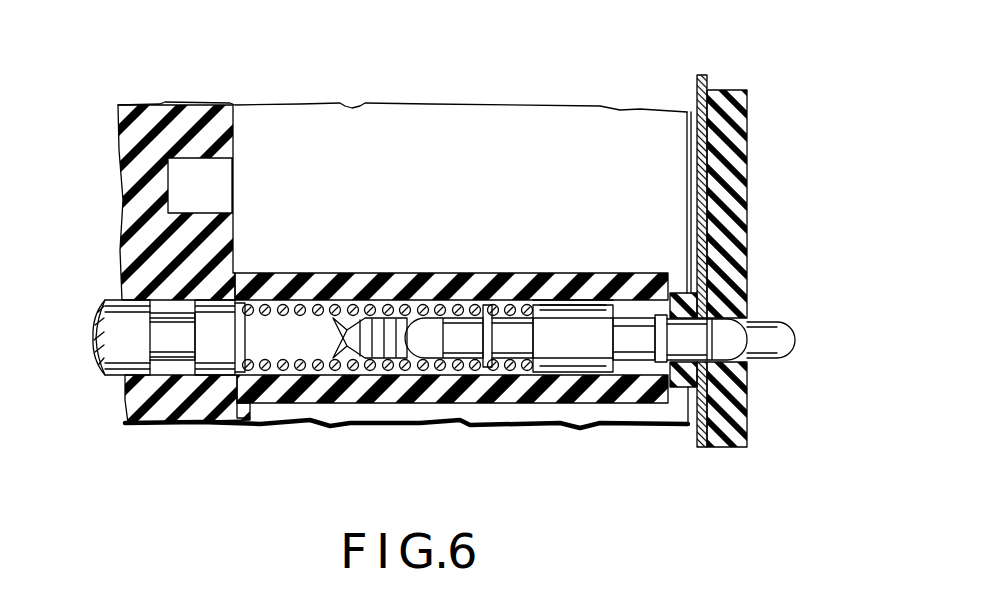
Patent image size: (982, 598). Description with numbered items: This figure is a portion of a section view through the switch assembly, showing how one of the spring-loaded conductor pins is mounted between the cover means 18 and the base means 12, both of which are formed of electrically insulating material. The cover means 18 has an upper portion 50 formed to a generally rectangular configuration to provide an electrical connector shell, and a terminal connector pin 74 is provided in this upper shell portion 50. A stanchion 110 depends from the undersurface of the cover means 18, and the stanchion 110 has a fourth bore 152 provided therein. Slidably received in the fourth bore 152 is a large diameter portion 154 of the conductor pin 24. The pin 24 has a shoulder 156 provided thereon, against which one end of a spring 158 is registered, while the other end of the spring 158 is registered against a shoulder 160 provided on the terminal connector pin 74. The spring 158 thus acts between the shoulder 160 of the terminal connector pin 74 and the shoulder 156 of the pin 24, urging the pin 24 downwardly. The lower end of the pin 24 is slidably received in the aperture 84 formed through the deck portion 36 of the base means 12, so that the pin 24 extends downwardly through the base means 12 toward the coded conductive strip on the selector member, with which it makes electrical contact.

The base means 12 is at (758, 168).
The cover means 18 is at (336, 94).
The conductor pin 24 is at (780, 318).
The deck portion 36 is at (688, 405).
The upper portion 50 is at (160, 103).
The terminal connector pin 74 is at (100, 372).
The aperture 84 is at (660, 275).
The stanchion 110 is at (297, 275).
The fourth bore 152 is at (586, 362).
The large diameter portion 154 is at (566, 300).
The shoulder 156 is at (505, 367).
The spring 158 is at (381, 316).
The shoulder 160 is at (247, 398).